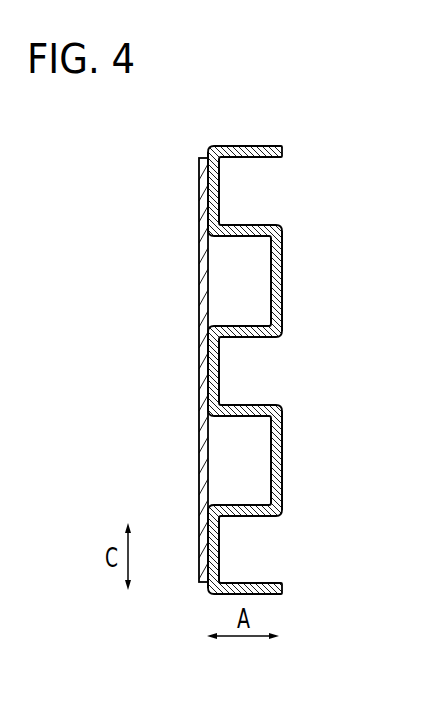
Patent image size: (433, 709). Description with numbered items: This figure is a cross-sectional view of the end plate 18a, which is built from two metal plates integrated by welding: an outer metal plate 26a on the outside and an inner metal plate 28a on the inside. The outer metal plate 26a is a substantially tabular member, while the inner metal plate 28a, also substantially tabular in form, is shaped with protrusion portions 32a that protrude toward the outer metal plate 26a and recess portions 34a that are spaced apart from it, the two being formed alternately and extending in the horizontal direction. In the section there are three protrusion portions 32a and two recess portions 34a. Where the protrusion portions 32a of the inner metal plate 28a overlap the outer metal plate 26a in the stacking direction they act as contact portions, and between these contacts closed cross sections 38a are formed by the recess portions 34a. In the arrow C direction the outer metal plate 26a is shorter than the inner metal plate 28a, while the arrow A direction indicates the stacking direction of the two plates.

The end plate 18a is at (241, 372).
The outer metal plate 26a is at (191, 194).
The inner metal plate 28a is at (253, 136).
The protrusion portion 32a is at (220, 189).
The recess portion 34a is at (272, 264).
The closed cross section 38a is at (232, 288).